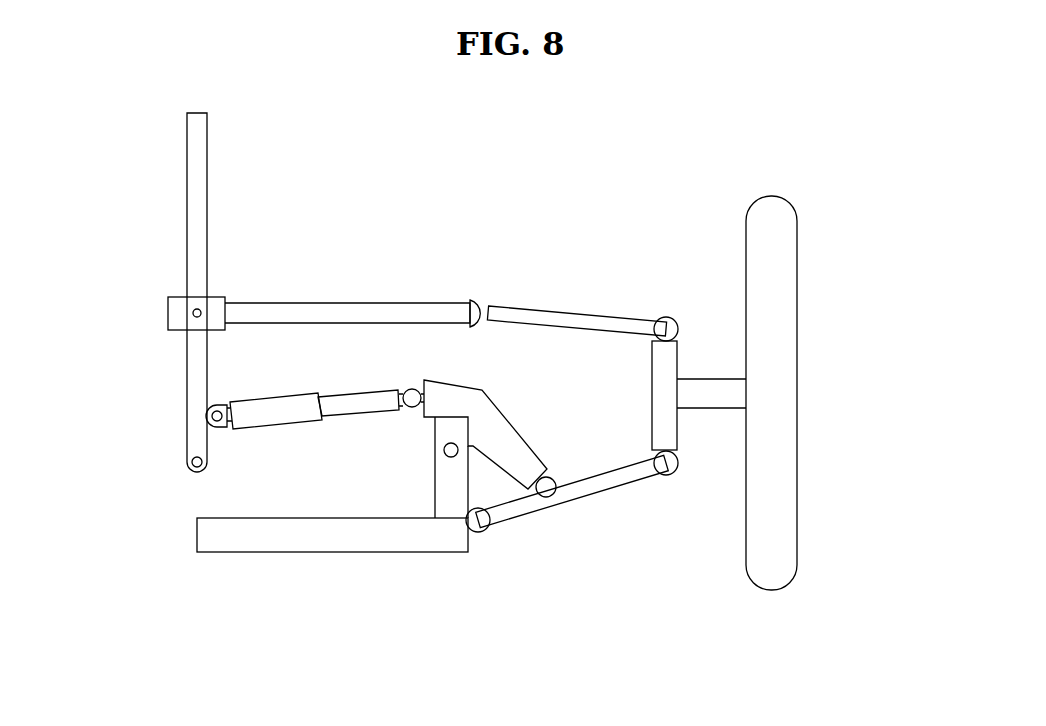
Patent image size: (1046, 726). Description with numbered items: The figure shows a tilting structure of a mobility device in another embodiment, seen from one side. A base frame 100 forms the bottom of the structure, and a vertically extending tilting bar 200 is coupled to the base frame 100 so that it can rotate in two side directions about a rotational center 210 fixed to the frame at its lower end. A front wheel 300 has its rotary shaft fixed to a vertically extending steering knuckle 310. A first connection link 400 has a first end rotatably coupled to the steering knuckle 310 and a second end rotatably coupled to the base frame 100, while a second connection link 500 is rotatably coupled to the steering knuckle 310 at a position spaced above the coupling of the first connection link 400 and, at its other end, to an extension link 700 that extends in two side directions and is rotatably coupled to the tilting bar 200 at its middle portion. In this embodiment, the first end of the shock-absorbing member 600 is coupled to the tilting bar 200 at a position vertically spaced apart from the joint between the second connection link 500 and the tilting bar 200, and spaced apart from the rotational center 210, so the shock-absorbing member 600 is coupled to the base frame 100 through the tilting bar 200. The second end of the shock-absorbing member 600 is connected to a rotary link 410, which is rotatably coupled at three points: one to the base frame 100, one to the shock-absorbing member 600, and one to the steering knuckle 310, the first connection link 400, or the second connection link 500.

The base frame 100 is at (322, 545).
The tilting bar 200 is at (192, 153).
The rotational center 210 is at (188, 460).
The front wheel 300 is at (783, 313).
The steering knuckle 310 is at (672, 428).
The first connection link 400 is at (585, 490).
The rotary link 410 is at (455, 395).
The second connection link 500 is at (580, 318).
The shock-absorbing member 600 is at (265, 403).
The extension link 700 is at (325, 312).